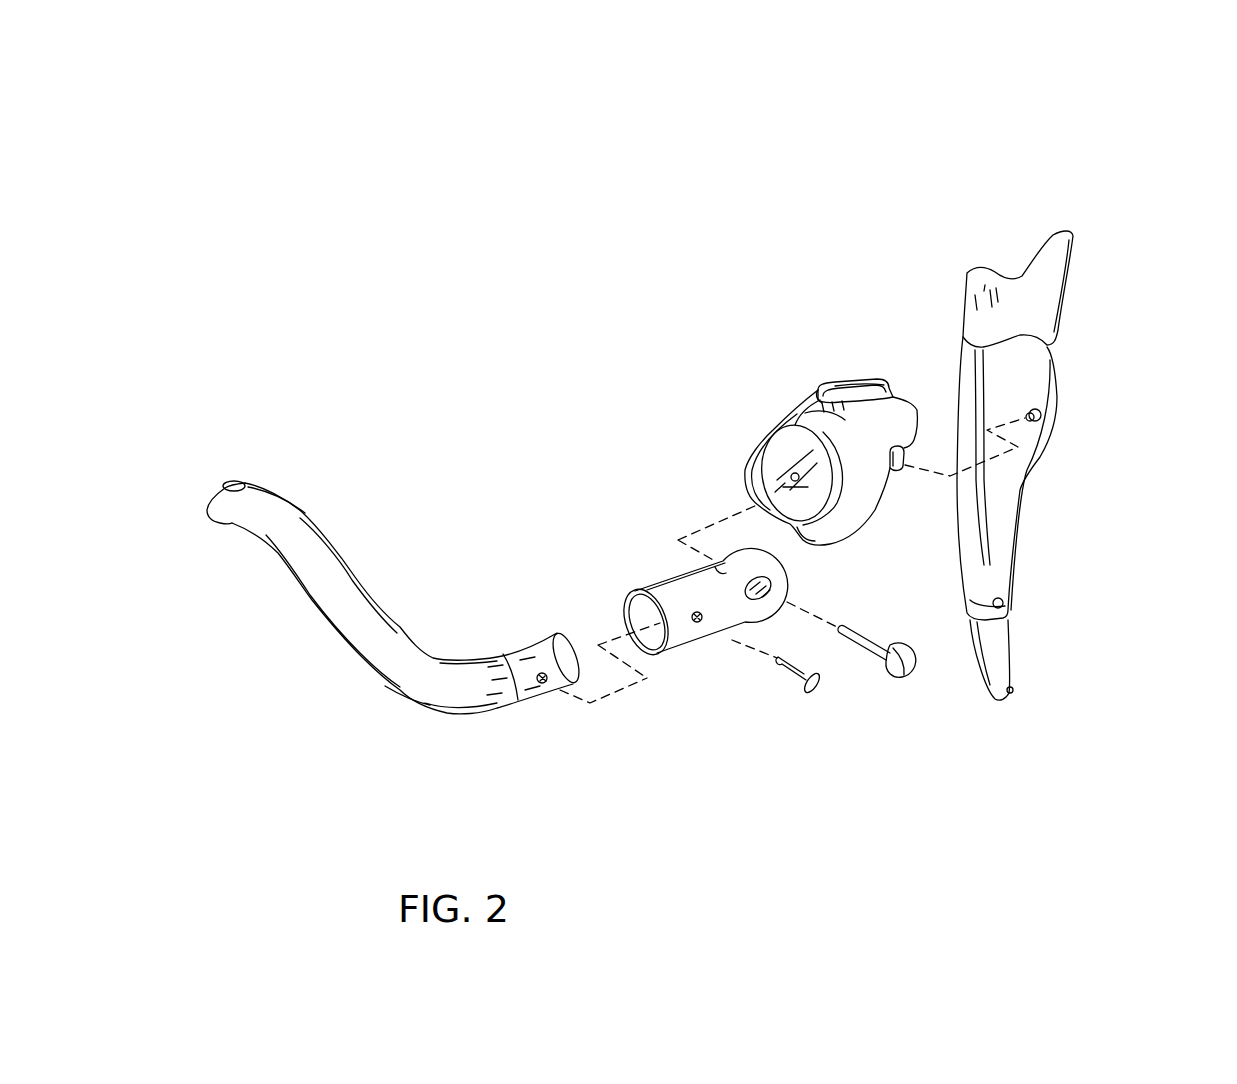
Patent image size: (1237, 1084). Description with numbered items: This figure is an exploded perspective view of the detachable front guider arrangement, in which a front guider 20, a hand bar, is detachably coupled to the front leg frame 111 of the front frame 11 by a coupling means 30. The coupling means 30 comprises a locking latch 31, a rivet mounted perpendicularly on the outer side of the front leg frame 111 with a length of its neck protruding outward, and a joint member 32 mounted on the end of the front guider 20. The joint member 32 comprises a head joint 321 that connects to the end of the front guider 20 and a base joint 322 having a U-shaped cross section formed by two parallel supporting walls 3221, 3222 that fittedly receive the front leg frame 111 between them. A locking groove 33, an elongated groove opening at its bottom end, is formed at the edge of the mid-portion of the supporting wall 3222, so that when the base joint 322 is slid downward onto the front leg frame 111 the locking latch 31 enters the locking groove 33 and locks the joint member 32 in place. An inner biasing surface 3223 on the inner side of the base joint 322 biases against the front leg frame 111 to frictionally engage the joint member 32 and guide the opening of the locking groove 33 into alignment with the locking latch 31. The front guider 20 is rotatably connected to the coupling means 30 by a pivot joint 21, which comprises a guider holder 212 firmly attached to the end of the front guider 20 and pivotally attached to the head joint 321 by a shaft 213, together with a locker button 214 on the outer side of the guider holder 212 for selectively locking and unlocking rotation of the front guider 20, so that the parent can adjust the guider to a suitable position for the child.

The front frame 11 is at (1093, 720).
The front leg frame 111 is at (1000, 647).
The front guider 20 is at (325, 562).
The pivot joint 21 is at (787, 723).
The guider holder 212 is at (684, 623).
The shaft 213 is at (865, 650).
The locker button 214 is at (912, 670).
The coupling means 30 is at (925, 178).
The locking latch 31 is at (1045, 418).
The joint member 32 is at (677, 278).
The head joint 321 is at (760, 448).
The base joint 322 is at (842, 290).
The supporting wall 3221 is at (867, 382).
The supporting wall 3222 is at (903, 397).
The inner biasing surface 3223 is at (840, 387).
The locking groove 33 is at (893, 487).